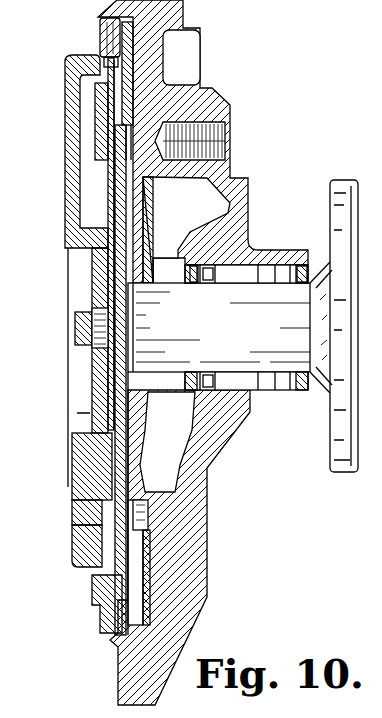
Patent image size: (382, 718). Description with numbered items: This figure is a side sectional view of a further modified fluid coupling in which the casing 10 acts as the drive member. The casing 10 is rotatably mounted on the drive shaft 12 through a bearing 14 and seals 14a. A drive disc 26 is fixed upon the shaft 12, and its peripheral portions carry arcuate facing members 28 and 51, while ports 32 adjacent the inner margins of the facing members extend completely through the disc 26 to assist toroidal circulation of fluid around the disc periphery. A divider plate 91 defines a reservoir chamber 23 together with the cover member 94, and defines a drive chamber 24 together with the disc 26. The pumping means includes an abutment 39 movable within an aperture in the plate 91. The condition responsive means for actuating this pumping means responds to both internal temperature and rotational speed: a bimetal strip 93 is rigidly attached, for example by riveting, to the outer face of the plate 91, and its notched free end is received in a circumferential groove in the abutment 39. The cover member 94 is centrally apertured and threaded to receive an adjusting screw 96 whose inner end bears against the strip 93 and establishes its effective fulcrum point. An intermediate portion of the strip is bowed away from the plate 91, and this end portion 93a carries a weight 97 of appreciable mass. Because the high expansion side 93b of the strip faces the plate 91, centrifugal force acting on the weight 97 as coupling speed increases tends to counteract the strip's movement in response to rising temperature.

The casing member 10 is at (230, 178).
The drive shaft 12 is at (231, 327).
The bearing 14 is at (242, 277).
The seals 14a is at (195, 266).
The reservoir chamber 23 is at (100, 511).
The drive chamber 24 is at (110, 490).
The drive disc 26 is at (148, 492).
The arcuate facing member 28 is at (110, 580).
The ports 32 is at (150, 520).
The abutment 39 is at (100, 42).
The arcuate facing member 51 is at (140, 568).
The divider plate 91 is at (100, 533).
The bimetal strip 93 is at (103, 228).
The end portion of bimetal strip 93a is at (108, 75).
The high expansion side 93b is at (112, 210).
The cover member 94 is at (92, 262).
The adjusting screw 96 is at (77, 320).
The weight 97 is at (100, 128).